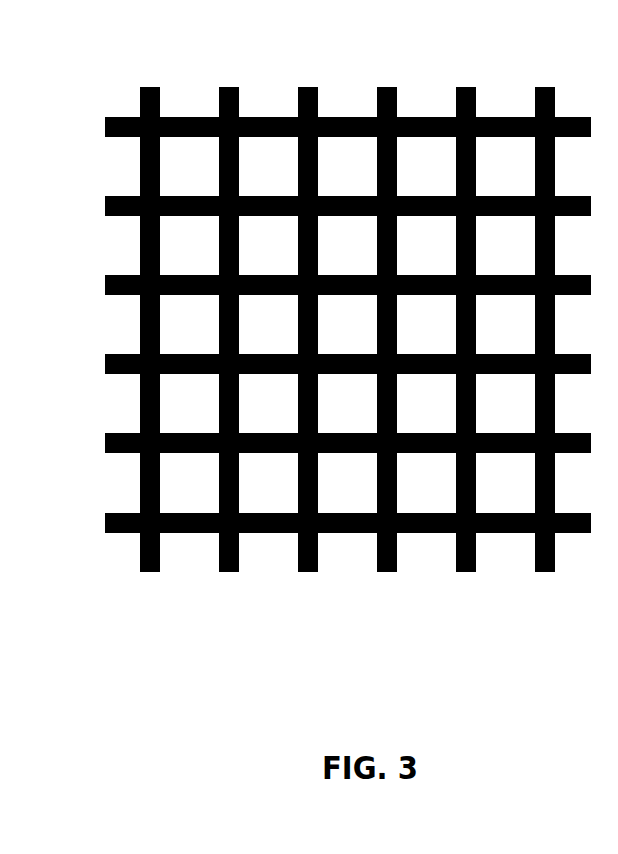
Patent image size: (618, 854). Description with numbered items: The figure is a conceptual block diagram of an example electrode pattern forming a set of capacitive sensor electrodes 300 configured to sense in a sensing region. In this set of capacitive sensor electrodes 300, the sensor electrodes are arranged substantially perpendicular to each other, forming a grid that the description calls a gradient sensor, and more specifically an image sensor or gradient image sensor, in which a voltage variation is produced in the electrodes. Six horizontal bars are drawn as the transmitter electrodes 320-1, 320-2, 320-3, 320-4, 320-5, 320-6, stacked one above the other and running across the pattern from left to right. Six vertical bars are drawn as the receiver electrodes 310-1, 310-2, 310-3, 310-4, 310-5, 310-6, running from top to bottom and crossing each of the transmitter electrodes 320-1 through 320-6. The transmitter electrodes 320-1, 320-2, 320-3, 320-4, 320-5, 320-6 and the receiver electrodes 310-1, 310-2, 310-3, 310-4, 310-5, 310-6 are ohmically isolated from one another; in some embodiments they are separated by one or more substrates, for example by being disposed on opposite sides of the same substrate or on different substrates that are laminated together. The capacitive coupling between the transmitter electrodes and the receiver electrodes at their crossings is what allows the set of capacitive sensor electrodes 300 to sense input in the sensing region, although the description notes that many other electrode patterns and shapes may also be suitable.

The set of capacitive sensor electrodes 300 is at (124, 24).
The transmitter sensor electrode 320-1 is at (105, 133).
The transmitter sensor electrode 320-2 is at (105, 212).
The transmitter sensor electrode 320-3 is at (105, 291).
The transmitter sensor electrode 320-4 is at (105, 370).
The transmitter sensor electrode 320-5 is at (105, 449).
The transmitter sensor electrode 320-6 is at (105, 529).
The receiver sensor electrode 310-1 is at (149, 572).
The receiver sensor electrode 310-2 is at (228, 572).
The receiver sensor electrode 310-3 is at (307, 572).
The receiver sensor electrode 310-4 is at (386, 572).
The receiver sensor electrode 310-5 is at (465, 572).
The receiver sensor electrode 310-6 is at (544, 572).